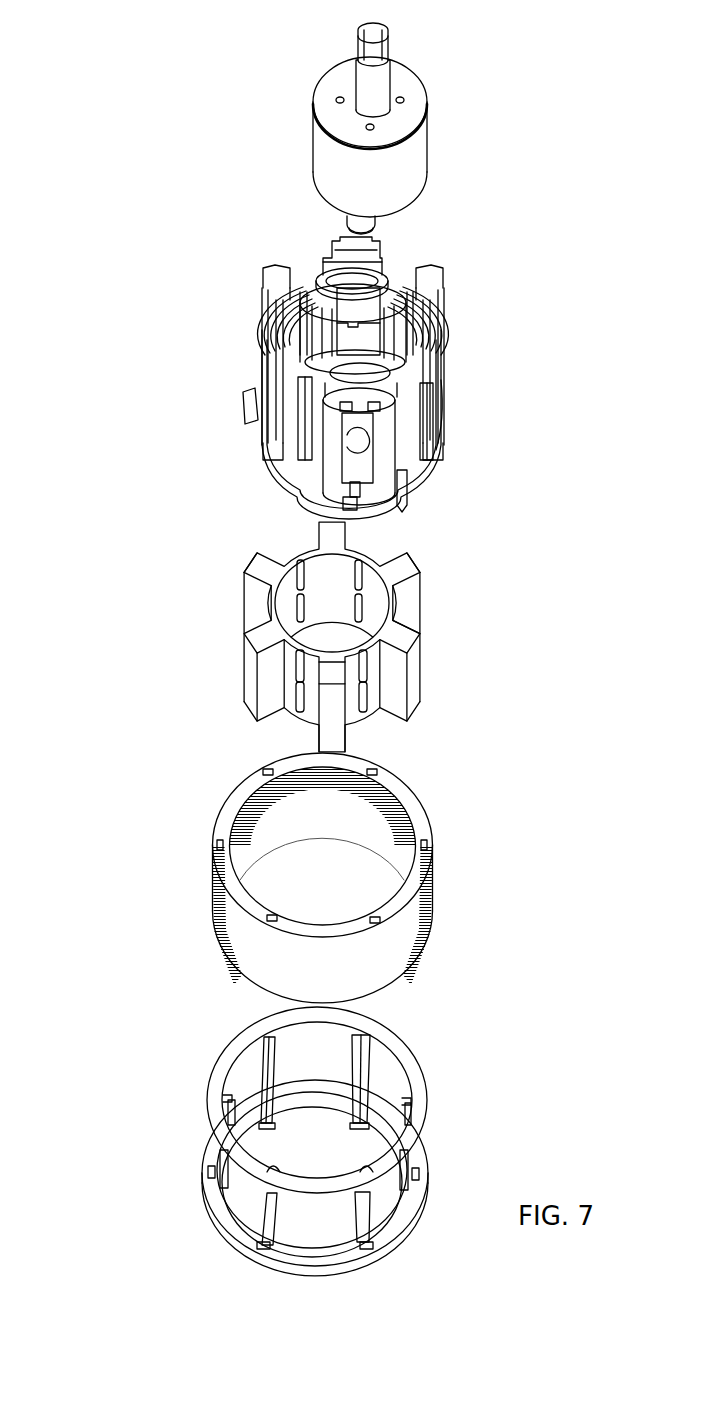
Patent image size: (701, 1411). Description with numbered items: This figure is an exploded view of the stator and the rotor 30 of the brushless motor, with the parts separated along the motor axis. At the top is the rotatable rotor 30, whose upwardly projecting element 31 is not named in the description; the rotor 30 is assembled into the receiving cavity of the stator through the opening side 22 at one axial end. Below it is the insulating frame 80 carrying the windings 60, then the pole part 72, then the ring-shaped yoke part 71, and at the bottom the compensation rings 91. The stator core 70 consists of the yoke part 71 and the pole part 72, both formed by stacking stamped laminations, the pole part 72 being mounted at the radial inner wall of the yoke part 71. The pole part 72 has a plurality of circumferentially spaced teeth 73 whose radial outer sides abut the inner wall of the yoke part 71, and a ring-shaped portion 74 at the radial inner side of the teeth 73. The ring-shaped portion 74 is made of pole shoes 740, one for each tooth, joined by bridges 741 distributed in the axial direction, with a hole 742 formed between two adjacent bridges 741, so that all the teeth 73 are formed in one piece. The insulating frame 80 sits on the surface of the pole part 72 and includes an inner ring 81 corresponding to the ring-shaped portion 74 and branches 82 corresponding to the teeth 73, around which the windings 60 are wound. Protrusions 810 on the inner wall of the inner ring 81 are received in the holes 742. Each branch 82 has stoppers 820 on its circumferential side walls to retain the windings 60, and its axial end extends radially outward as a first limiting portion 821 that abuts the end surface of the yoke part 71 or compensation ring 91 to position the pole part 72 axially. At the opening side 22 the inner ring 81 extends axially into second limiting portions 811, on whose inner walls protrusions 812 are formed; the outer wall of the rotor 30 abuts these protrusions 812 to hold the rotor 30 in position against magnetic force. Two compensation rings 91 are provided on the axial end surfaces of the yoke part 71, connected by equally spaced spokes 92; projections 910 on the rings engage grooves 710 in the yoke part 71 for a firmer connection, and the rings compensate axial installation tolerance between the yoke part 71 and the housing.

The opening side 22 is at (355, 297).
The rotor 30 is at (408, 178).
The motor shaft 31 is at (377, 84).
The windings 60 is at (325, 263).
The stator core 70 is at (147, 642).
The yoke part 71 is at (326, 878).
The pole part 72 is at (324, 636).
The teeth 73 is at (405, 570).
The ring-shaped portion 74 is at (388, 620).
The insulating frame 80 is at (167, 442).
The inner ring 81 is at (317, 410).
The branches 82 is at (283, 372).
The compensation ring 91 is at (351, 1141).
The spokes 92 is at (367, 1072).
The grooves 710 is at (433, 850).
The pole shoes 740 is at (250, 572).
The bridges 741 is at (303, 560).
The hole 742 is at (365, 555).
The protrusions 810 is at (382, 345).
The second limiting portions 811 is at (285, 330).
The protrusions 812 is at (297, 284).
The stoppers 820 is at (421, 430).
The first limiting portion 821 is at (273, 348).
The projections 910 is at (422, 1172).